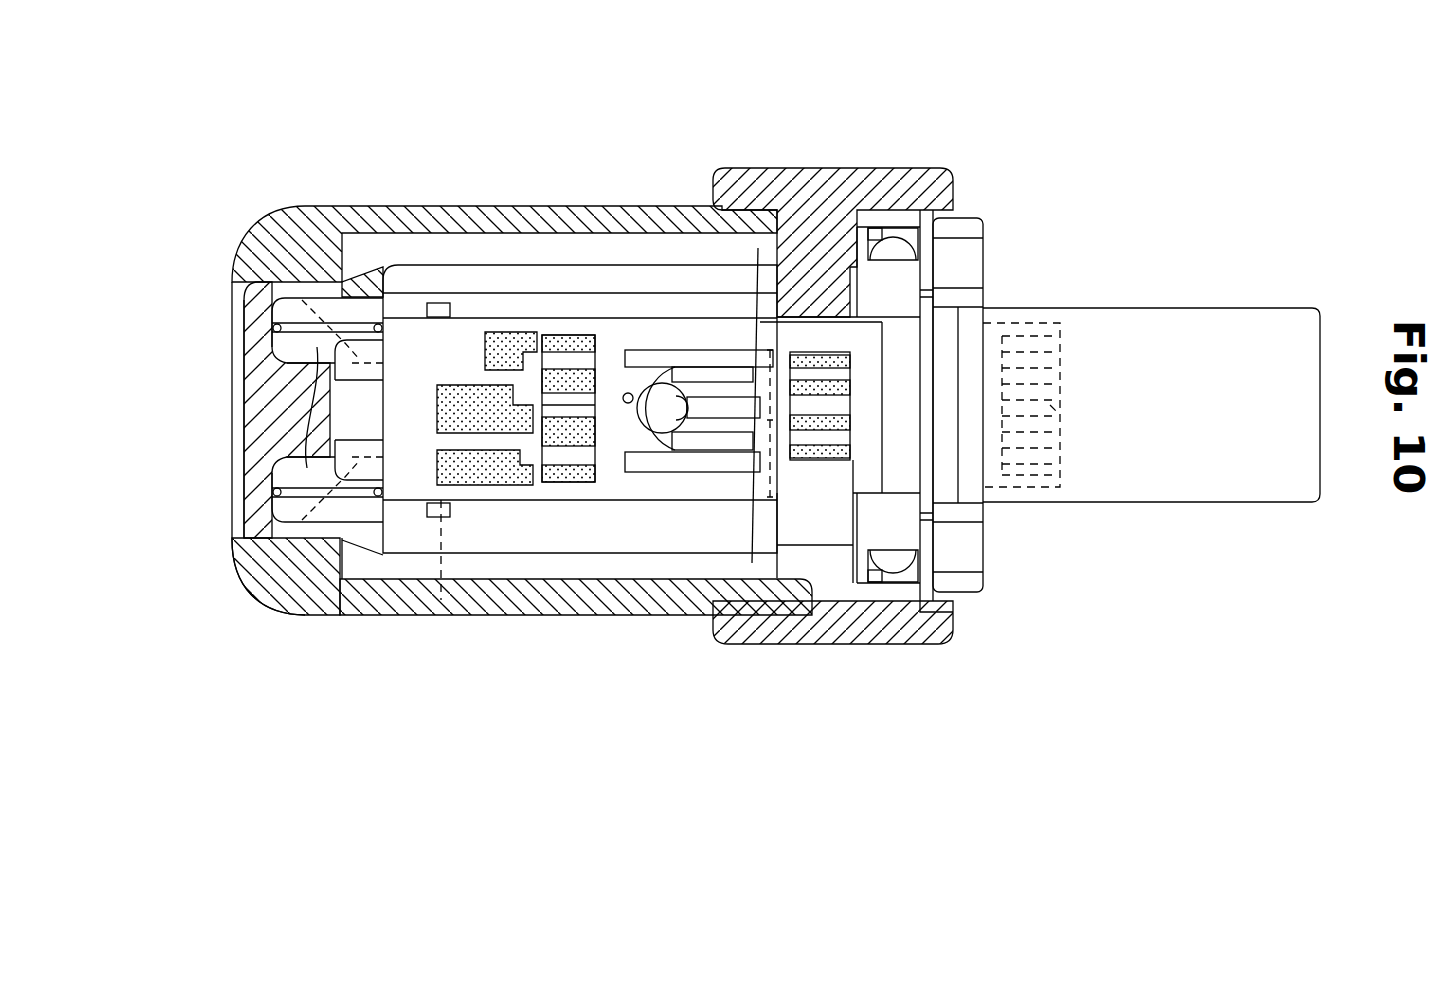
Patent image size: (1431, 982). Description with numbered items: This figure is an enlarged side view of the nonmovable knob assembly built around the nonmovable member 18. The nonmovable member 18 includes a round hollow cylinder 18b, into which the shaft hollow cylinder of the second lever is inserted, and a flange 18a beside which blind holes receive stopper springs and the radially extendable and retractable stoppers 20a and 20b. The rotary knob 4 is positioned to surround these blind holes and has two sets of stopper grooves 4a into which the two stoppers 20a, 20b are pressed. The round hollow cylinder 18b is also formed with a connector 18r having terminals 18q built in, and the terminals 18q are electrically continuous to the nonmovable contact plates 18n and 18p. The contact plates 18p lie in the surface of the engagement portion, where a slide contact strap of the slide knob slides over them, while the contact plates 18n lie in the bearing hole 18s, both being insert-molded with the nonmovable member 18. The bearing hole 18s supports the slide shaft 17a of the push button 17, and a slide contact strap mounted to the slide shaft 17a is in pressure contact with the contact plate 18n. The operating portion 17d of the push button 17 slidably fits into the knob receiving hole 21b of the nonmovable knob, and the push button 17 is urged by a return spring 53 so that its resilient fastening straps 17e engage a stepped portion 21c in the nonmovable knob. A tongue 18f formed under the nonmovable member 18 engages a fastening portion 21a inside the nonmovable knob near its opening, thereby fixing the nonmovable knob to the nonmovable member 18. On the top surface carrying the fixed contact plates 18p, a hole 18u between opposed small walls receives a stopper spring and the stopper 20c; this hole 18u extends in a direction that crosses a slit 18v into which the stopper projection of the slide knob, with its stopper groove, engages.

The rotary knob 4 is at (816, 168).
The stopper grooves 4a is at (880, 245).
The push button 17 is at (240, 410).
The slide shaft 17a is at (243, 280).
The operating portion 17d is at (320, 352).
The resilient fastening straps 17e is at (350, 240).
The nonmovable member 18 is at (554, 320).
The flange 18a is at (966, 218).
The round hollow cylinder 18b is at (1200, 308).
The tongue 18f is at (430, 303).
The nonmovable contact plates 18n is at (582, 380).
The nonmovable contact plates 18p is at (512, 360).
The terminals 18q is at (1048, 445).
The connector 18r is at (1060, 412).
The bearing hole 18s is at (307, 468).
The hole 18u is at (673, 420).
The slit 18v is at (624, 396).
The stopper 20a is at (938, 632).
The stopper 20b is at (884, 233).
The stopper 20c is at (657, 417).
The fastening portion 21a is at (445, 300).
The knob receiving hole 21b is at (243, 301).
The stepped portion 21c is at (380, 275).
The return spring 53 is at (262, 598).